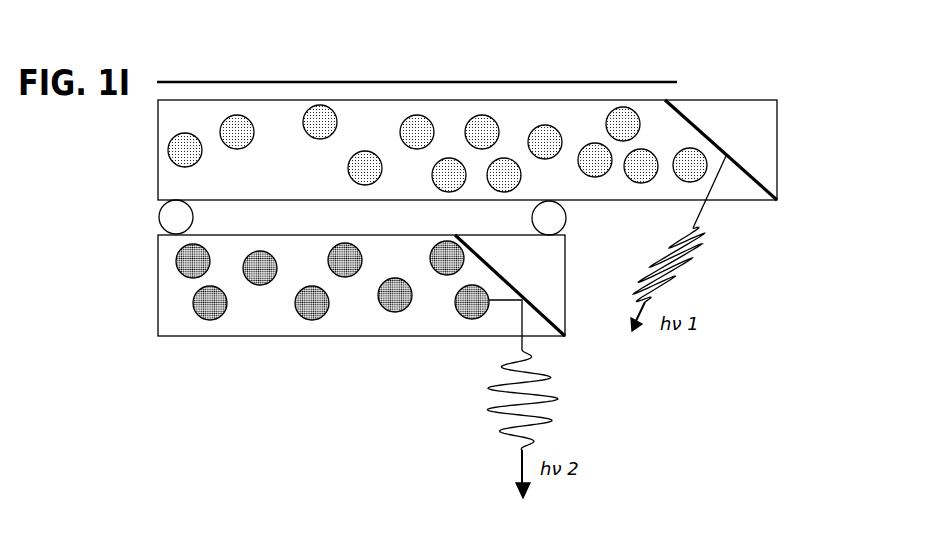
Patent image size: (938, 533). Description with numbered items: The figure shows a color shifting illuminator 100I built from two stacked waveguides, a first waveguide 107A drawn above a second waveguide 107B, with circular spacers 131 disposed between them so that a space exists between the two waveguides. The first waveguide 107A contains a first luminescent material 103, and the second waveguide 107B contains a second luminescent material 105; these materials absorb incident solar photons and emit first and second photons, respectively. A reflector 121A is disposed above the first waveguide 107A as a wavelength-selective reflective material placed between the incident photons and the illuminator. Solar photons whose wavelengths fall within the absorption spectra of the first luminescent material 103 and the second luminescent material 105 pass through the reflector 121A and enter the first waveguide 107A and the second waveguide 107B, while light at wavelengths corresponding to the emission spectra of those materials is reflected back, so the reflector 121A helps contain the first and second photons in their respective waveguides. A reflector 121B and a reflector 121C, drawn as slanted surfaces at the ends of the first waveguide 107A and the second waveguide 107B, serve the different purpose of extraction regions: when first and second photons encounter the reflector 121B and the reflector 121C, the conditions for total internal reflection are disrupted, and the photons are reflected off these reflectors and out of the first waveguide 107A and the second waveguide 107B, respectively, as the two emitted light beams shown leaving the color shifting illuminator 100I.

The color shifting illuminator 100I is at (193, 57).
The reflector 121A is at (400, 82).
The reflector 121B is at (704, 134).
The reflector 121C is at (495, 270).
The first luminescent material 103 is at (176, 146).
The first waveguide 107A is at (172, 176).
The second waveguide 107B is at (265, 302).
The spacers 131 is at (172, 218).
The second luminescent material 105 is at (205, 320).